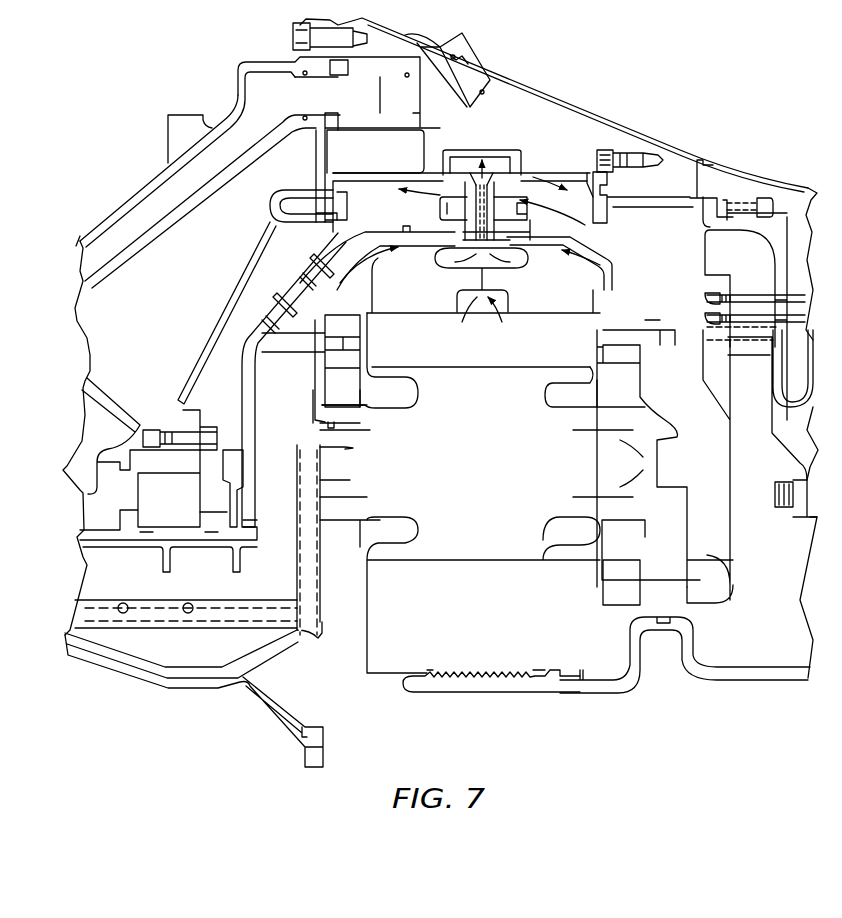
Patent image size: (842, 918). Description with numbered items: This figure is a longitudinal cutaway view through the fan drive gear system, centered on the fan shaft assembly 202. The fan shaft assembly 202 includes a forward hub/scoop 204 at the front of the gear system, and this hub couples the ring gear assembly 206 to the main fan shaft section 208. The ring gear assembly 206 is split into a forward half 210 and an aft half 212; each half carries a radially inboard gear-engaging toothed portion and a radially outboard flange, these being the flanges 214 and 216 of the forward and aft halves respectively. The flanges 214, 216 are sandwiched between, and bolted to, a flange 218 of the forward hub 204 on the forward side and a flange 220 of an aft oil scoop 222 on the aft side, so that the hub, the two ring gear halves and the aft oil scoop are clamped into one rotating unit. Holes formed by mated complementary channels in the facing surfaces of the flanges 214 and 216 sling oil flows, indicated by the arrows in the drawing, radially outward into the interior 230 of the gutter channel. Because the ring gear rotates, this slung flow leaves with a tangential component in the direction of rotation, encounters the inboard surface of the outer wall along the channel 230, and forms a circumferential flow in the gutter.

The fan shaft assembly 202 is at (250, 322).
The forward hub/scoop 204 is at (257, 313).
The ring gear assembly 206 is at (528, 272).
The main fan shaft section 208 is at (98, 560).
The forward half 210 is at (390, 297).
The aft half 212 is at (555, 300).
The flange 214 is at (476, 152).
The flange 216 is at (493, 187).
The flange of the hub 218 is at (445, 182).
The flange of the aft oil scoop 220 is at (615, 152).
The aft oil scoop 222 is at (612, 268).
The interior of the gutter channel 230 is at (500, 176).